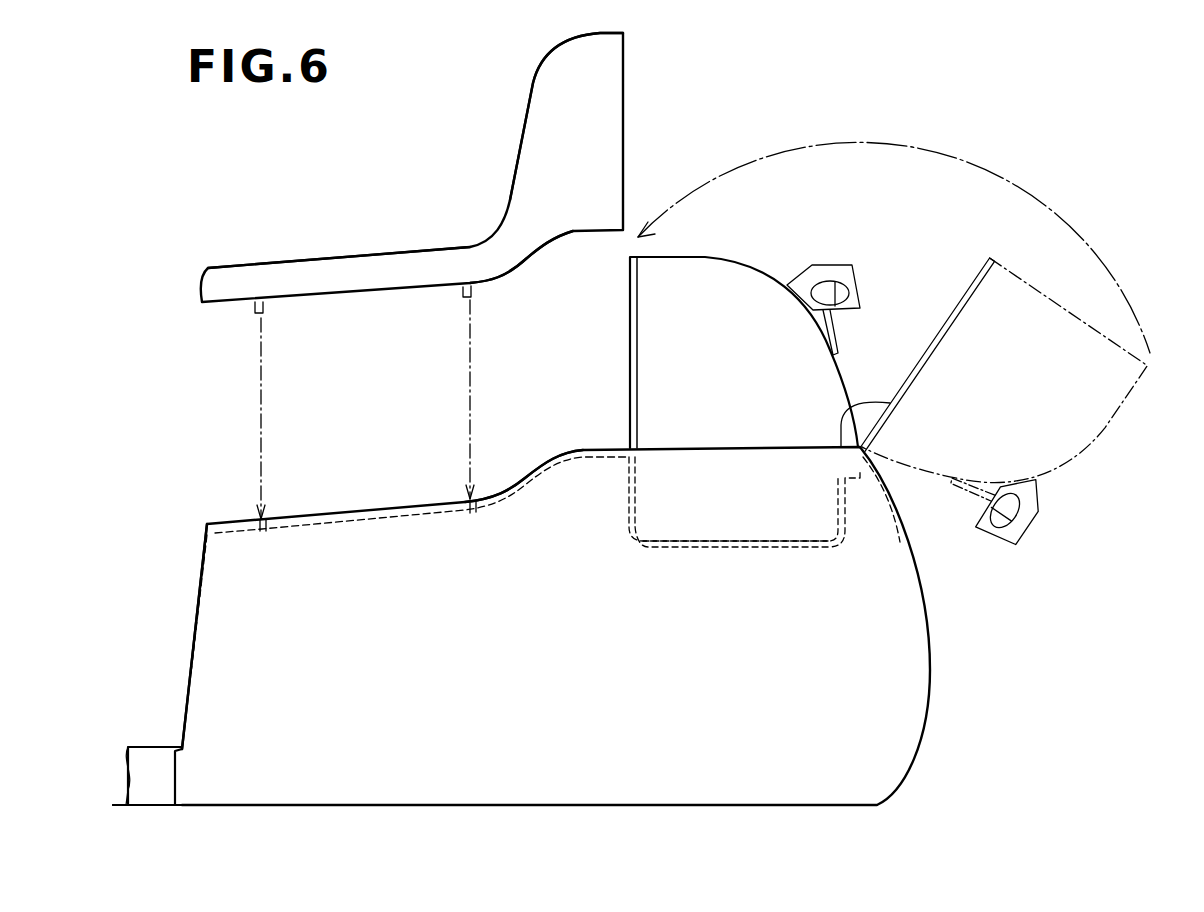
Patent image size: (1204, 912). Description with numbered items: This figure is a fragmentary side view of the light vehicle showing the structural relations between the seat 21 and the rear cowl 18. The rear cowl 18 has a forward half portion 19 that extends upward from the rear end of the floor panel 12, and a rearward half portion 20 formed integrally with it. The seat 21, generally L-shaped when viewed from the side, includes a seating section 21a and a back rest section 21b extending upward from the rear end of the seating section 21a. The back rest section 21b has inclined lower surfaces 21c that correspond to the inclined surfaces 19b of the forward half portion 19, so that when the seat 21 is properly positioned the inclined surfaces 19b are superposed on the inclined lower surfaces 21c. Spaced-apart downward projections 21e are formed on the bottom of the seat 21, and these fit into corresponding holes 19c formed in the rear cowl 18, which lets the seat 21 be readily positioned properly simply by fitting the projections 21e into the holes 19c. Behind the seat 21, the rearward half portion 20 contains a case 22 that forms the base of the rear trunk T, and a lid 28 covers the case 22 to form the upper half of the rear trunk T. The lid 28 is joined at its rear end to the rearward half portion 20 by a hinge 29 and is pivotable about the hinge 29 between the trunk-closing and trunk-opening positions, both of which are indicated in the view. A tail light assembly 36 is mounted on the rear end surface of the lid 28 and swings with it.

The floor panel 12 is at (142, 756).
The rear cowl 18 is at (189, 604).
The forward half portion 19 is at (204, 550).
The inclined surfaces 19b is at (522, 480).
The holes 19c is at (266, 531).
The rearward half portion 20 is at (902, 640).
The seat 21 is at (345, 228).
The seating section 21a is at (390, 250).
The back rest section 21b is at (527, 120).
The inclined lower surfaces 21c is at (533, 260).
The downward projections 21e is at (253, 307).
The case 22 is at (773, 541).
The lid 28 is at (743, 287).
The hinge 29 is at (890, 403).
The tail light assembly 36 is at (853, 277).
The rear trunk T is at (730, 490).